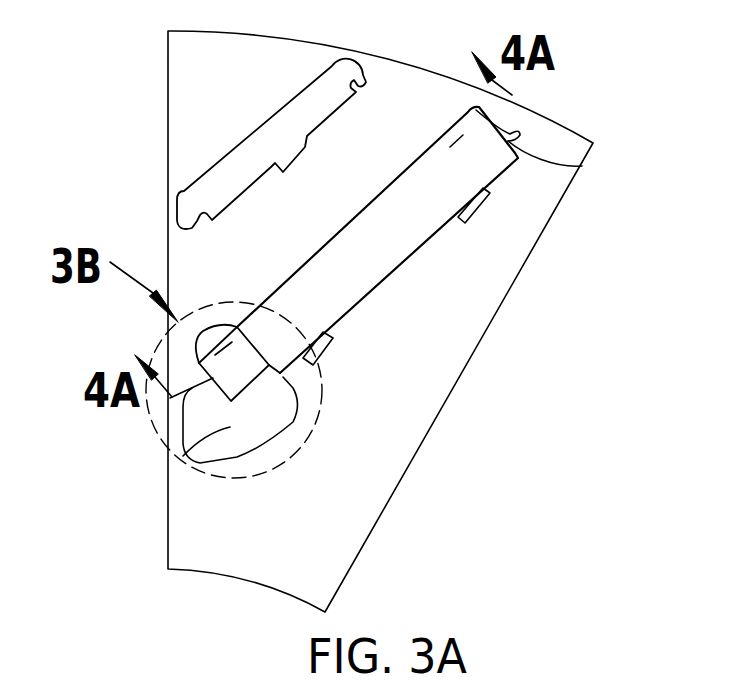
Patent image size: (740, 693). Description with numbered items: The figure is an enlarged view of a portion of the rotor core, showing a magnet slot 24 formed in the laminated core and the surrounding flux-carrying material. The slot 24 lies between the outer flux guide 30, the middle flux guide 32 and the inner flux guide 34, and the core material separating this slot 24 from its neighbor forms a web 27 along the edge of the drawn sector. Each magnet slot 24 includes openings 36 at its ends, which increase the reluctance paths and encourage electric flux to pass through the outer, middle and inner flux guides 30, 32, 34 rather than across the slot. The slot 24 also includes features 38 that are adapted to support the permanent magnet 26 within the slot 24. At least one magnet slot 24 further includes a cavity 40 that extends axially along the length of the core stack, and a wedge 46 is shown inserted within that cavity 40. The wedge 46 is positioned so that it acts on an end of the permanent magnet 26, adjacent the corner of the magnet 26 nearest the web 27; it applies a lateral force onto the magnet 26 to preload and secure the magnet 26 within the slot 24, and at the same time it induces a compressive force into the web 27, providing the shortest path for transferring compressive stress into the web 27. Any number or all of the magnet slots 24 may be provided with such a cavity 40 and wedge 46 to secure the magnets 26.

The magnet slot 24 is at (347, 64).
The permanent magnet 26 is at (388, 256).
The web 27 is at (168, 213).
The outer flux guide 30 is at (249, 108).
The middle flux guide 32 is at (336, 200).
The inner flux guide 34 is at (429, 317).
The opening 36 is at (512, 133).
The feature 38 is at (582, 167).
The cavity 40 is at (204, 346).
The wedge 46 is at (251, 378).